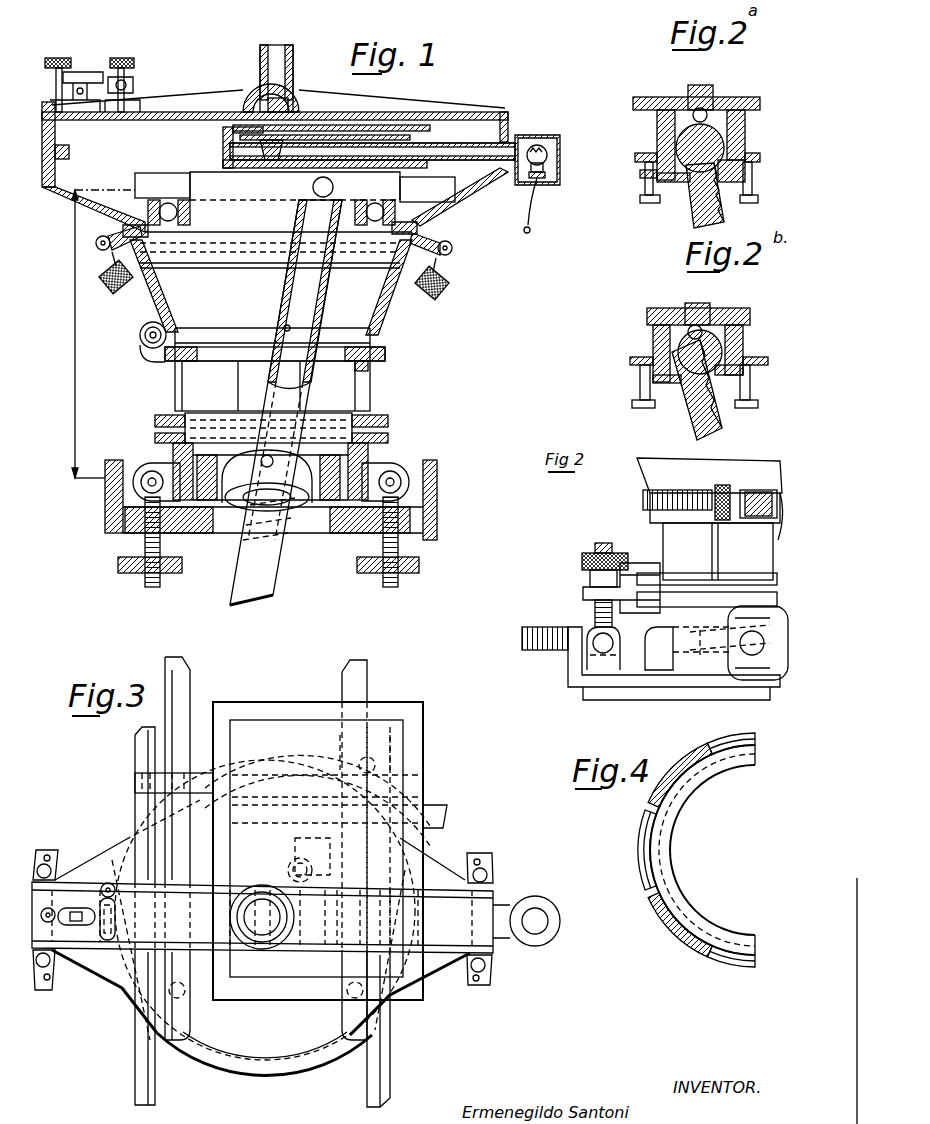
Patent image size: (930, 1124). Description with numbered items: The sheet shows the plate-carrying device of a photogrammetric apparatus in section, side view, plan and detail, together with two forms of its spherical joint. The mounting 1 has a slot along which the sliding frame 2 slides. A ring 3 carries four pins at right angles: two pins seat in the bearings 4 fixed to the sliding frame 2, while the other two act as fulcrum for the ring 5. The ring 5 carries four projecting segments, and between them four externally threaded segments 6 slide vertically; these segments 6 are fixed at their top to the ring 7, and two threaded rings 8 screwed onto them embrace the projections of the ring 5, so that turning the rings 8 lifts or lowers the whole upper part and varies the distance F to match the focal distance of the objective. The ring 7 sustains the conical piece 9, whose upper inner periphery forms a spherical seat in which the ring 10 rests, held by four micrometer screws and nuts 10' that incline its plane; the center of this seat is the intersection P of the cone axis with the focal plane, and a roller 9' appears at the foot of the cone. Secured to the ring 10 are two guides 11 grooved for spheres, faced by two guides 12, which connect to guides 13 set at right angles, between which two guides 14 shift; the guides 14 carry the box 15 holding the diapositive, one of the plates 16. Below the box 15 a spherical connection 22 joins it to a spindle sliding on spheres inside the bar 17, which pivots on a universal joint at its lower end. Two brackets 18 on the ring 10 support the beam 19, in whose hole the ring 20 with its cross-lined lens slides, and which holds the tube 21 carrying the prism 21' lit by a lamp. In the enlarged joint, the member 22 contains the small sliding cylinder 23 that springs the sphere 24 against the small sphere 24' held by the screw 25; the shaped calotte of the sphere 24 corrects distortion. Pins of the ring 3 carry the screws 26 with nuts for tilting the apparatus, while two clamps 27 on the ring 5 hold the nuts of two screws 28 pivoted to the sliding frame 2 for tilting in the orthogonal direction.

In FIG. 1, the mounting 1 is at (106, 504).
In FIG. 2, the mounting 1 is at (620, 693).
In FIG. 1, the sliding frame 2 is at (190, 536).
In FIG. 2, the sliding frame 2 is at (585, 678).
In FIG. 1, the ring 3 is at (365, 466).
In FIG. 2, the bearings 4 is at (687, 649).
In FIG. 1, the ring 5 is at (369, 420).
In FIG. 2, the ring 5 is at (764, 614).
In FIG. 4, the ring 5 is at (677, 794).
In FIG. 1, the externally threaded segments 6 is at (270, 327).
In FIG. 2, the externally threaded segments 6 is at (718, 551).
In FIG. 4, the externally threaded segments 6 is at (690, 756).
In FIG. 1, the ring 7 is at (382, 359).
In FIG. 1, the threaded rings 8 is at (156, 436).
In FIG. 2, the threaded rings 8 is at (677, 578).
In FIG. 1, the conical piece 9 is at (269, 301).
In FIG. 2, the conical piece 9 is at (710, 499).
In FIG. 3, the conical piece 9 is at (265, 1045).
In FIG. 1, the roller 9' is at (140, 339).
In FIG. 1, the ring 10 is at (274, 265).
In FIG. 3, the ring 10 is at (264, 1055).
In FIG. 1, the micrometer screws and nuts 10' is at (267, 291).
In FIG. 1, the guides 11 is at (150, 208).
In FIG. 3, the guides 11 is at (140, 1056).
In FIG. 1, the guides 12 is at (189, 216).
In FIG. 3, the guides 12 is at (186, 1017).
In FIG. 1, the guides 13 is at (162, 185).
In FIG. 3, the guides 13 is at (188, 880).
In FIG. 1, the guides 14 is at (427, 189).
In FIG. 3, the guides 14 is at (425, 883).
In FIG. 1, the box 15 is at (223, 150).
In FIG. 2A, the box 15 is at (733, 101).
In FIG. 2B, the box 15 is at (735, 316).
In FIG. 3, the box 15 is at (397, 712).
In FIG. 1, the plates 16 is at (391, 128).
In FIG. 3, the plates 16 is at (272, 895).
In FIG. 1, the bar 17 is at (326, 298).
In FIG. 1, the brackets 18 is at (72, 207).
In FIG. 3, the brackets 18 is at (100, 965).
In FIG. 1, the beam 19 is at (278, 102).
In FIG. 3, the beam 19 is at (262, 917).
In FIG. 1, the ring 20 is at (250, 95).
In FIG. 3, the ring 20 is at (262, 917).
In FIG. 1, the tube 21 is at (372, 150).
In FIG. 3, the tube 21 is at (526, 917).
In FIG. 1, the prism 21' is at (260, 152).
In FIG. 1, the spherical connection 22 is at (333, 188).
In FIG. 2A, the spherical connection 22 is at (740, 137).
In FIG. 2B, the spherical connection 22 is at (735, 345).
In FIG. 2A, the small sliding cylinder 23 is at (672, 182).
In FIG. 2B, the small sliding cylinder 23 is at (668, 385).
In FIG. 2A, the sphere 24 is at (717, 176).
In FIG. 2B, the sphere 24 is at (712, 385).
In FIG. 2A, the small sphere 24' is at (667, 120).
In FIG. 2B, the small sphere 24' is at (659, 334).
In FIG. 2A, the screw 25 is at (707, 95).
In FIG. 2B, the screw 25 is at (684, 304).
In FIG. 1, the screws 26 is at (152, 588).
In FIG. 2, the clamps 27 is at (647, 570).
In FIG. 2, the screws 28 is at (585, 560).
In FIG. 1, the intersection P is at (295, 186).
In FIG. 1, the distance F is at (103, 334).